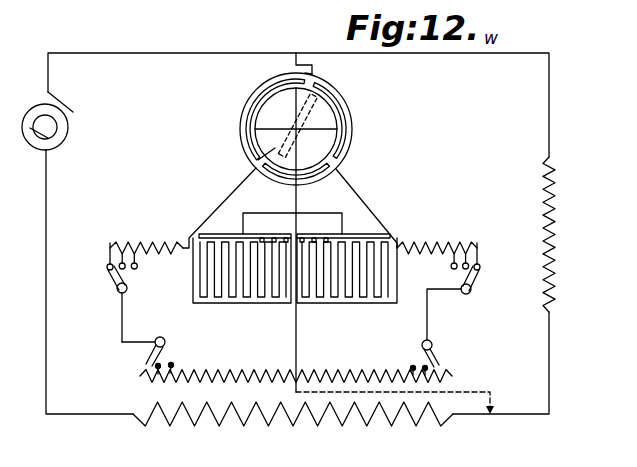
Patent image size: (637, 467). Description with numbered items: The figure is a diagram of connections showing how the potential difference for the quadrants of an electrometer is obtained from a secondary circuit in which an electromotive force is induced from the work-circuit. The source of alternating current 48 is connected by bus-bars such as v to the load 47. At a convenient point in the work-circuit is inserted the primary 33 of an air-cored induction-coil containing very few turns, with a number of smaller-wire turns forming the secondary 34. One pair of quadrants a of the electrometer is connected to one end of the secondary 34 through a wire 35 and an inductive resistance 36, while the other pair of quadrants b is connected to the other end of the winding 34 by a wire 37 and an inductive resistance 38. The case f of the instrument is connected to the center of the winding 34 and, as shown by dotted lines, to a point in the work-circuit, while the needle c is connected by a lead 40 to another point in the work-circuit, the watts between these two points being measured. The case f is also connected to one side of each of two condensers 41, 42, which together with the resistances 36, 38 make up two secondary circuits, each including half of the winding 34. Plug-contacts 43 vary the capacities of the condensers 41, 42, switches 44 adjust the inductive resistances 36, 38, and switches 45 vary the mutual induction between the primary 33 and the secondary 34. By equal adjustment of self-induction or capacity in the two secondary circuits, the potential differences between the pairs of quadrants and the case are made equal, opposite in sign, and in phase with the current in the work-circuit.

The primary of induction-coil 33 is at (293, 425).
The secondary winding 34 is at (258, 371).
The wire 35 is at (222, 200).
The inductive resistance 36 is at (146, 246).
The wire 37 is at (373, 207).
The inductive resistance 38 is at (437, 246).
The lead 40 is at (312, 65).
The condenser 41 is at (238, 240).
The condenser 42 is at (370, 233).
The plug-contacts 43 is at (262, 233).
The switches 44 is at (127, 287).
The switches 45 is at (153, 350).
The load 47 is at (556, 242).
The source of alternating current 48 is at (62, 130).
The pair of quadrants a is at (262, 134).
The pair of quadrants b is at (325, 143).
The needle c is at (300, 123).
The case f is at (313, 145).
The bus-bar v is at (497, 431).